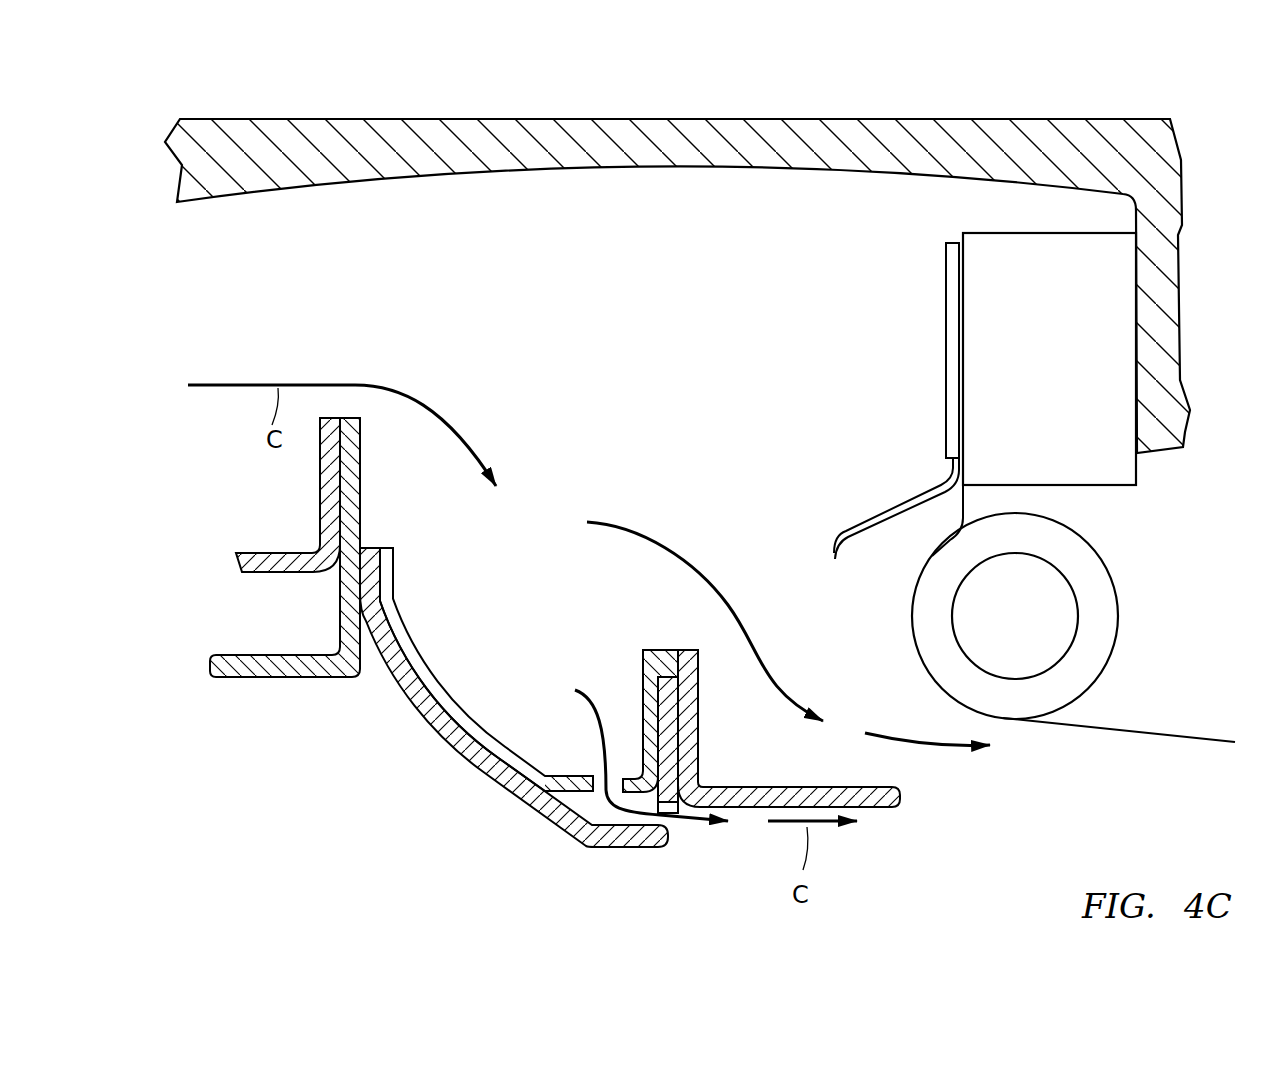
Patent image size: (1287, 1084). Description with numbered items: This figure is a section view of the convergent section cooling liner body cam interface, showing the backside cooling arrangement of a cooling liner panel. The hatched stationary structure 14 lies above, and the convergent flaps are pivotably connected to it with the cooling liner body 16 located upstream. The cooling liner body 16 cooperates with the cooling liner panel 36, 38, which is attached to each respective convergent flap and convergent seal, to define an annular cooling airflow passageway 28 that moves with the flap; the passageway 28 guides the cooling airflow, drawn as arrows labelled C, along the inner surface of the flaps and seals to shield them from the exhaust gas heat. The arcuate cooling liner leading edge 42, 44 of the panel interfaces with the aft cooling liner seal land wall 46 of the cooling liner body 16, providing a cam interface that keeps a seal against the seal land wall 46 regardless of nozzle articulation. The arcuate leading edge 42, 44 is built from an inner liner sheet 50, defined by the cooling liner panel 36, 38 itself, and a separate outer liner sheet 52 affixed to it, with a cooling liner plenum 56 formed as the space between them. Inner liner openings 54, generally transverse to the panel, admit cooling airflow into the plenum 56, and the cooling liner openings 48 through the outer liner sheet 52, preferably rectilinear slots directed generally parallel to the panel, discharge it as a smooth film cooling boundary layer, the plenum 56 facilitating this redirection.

The stationary structure 14 is at (509, 165).
The cooling liner body 16 is at (214, 603).
The annular cooling airflow passageway 28 is at (503, 414).
The cooling liner panel 36 is at (806, 670).
The cooling liner panel 38 is at (806, 670).
The arcuate cooling liner leading edge 42 is at (514, 714).
The arcuate cooling liner leading edge 44 is at (520, 706).
The aft cooling liner seal land wall 46 is at (353, 607).
The cooling liner openings 48 is at (668, 830).
The inner liner sheet 50 is at (498, 755).
The outer liner sheet 52 is at (513, 793).
The inner liner openings 54 is at (578, 776).
The cooling liner plenum 56 is at (603, 806).